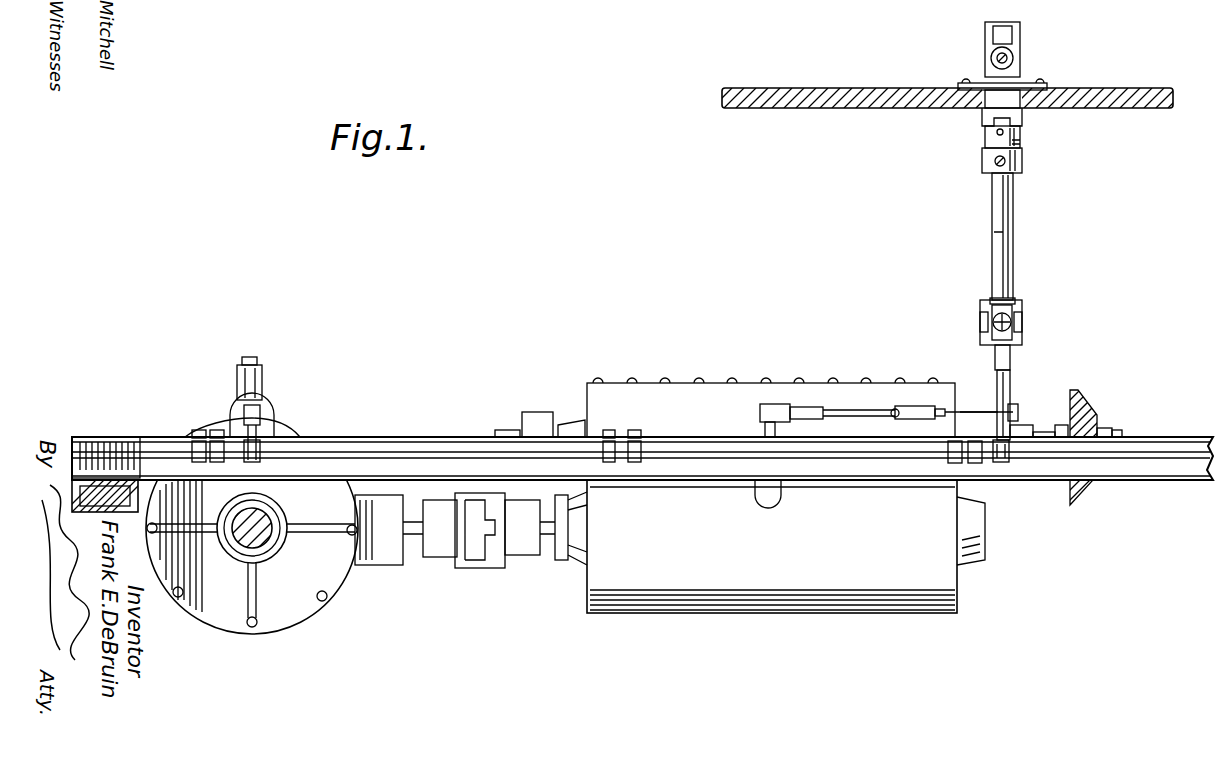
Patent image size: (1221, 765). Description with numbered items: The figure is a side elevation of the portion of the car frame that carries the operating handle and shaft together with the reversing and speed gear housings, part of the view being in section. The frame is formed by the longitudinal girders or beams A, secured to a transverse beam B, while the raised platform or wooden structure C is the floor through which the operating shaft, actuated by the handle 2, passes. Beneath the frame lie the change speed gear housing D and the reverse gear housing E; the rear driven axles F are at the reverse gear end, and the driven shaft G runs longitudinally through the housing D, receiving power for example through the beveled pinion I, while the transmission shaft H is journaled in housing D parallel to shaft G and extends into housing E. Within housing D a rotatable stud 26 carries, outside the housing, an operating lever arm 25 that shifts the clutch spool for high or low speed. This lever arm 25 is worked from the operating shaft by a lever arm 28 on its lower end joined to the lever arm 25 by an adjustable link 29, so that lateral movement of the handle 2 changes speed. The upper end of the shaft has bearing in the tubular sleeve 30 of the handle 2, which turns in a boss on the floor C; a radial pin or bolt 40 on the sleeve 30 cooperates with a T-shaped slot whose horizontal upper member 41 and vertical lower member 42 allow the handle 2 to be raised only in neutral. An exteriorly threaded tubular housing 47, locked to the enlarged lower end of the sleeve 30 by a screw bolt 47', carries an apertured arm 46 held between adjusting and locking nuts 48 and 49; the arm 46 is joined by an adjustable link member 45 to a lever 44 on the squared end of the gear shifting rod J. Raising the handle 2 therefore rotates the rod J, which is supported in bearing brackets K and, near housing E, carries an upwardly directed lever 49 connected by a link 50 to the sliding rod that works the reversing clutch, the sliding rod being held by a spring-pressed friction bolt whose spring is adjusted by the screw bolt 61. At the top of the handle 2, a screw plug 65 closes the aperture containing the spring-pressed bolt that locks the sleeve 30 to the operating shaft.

The girders or beams A is at (642, 458).
The transverse beam B is at (110, 440).
The raised platform C is at (800, 88).
The change speed gear housing D is at (786, 546).
The reverse gear housing E is at (252, 557).
The rear driven axles F is at (316, 486).
The driven shaft G is at (1045, 432).
The transmission shaft H is at (425, 525).
The beveled pinion I is at (1098, 418).
The gear shifting rod J is at (460, 455).
The bearing brackets K is at (200, 432).
The handle 2 is at (1010, 58).
The screw plug 65 is at (1012, 62).
The upper slot member 41 is at (992, 114).
The radial pin or bolt 40 is at (1020, 133).
The lower slot member 42 is at (998, 134).
The tubular sleeve 30 is at (1020, 143).
The screw bolt 47' is at (972, 169).
The tubular housing 47 is at (1034, 236).
The adjusting and locking nut 48 is at (990, 308).
The apertured arm 46 is at (1022, 323).
The adjusting and locking nut 49 is at (258, 432).
The lever arm 28 is at (972, 410).
The adjustable link member 45 is at (1014, 414).
The operating lever arm 25 is at (765, 400).
The adjustable link 29 is at (843, 410).
The rotatable bolt or stud 26 is at (760, 402).
The lever 44 is at (984, 462).
The screw bolt 61 is at (258, 366).
The link 50 is at (272, 406).